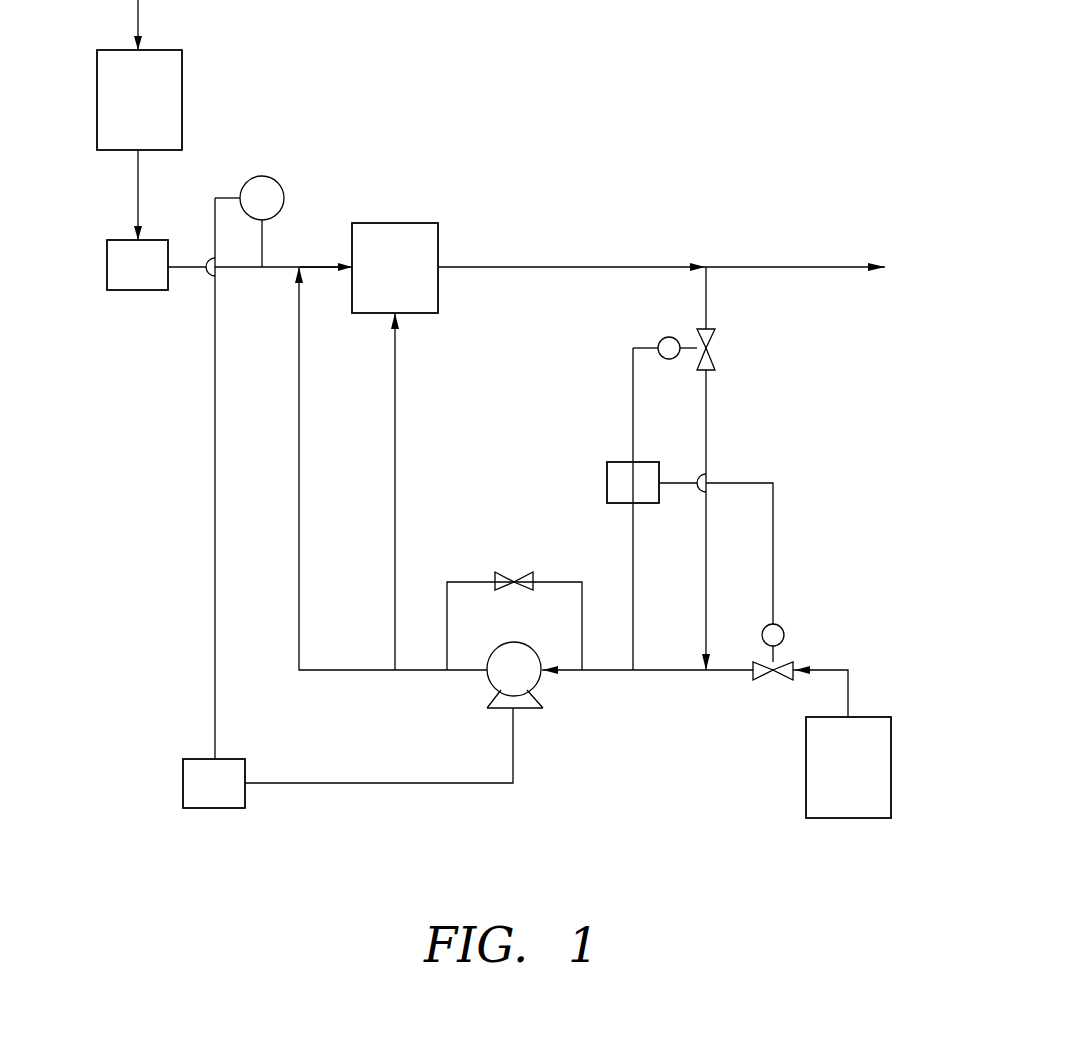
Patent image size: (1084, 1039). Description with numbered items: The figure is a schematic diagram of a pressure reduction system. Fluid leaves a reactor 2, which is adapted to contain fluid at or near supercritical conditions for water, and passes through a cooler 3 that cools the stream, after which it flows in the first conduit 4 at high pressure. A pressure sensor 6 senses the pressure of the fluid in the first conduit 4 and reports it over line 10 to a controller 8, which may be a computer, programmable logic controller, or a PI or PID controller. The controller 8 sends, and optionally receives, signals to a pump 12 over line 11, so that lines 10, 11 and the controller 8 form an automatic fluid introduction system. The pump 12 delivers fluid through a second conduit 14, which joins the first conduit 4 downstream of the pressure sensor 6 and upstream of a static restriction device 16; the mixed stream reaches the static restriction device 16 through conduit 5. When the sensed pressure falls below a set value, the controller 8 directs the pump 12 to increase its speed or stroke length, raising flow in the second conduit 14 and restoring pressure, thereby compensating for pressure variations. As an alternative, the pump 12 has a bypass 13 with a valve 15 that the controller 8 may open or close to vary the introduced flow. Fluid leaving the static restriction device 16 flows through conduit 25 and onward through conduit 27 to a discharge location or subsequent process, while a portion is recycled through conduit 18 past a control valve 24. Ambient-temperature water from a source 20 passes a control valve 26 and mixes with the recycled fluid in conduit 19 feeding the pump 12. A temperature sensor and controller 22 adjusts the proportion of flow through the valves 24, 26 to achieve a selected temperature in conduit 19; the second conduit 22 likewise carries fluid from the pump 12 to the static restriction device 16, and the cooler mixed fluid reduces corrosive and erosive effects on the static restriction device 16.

The reactor 2 is at (166, 103).
The cooler 3 is at (150, 290).
The first conduit 4 is at (282, 278).
The conduit 5 is at (318, 270).
The pressure sensor 6 is at (263, 193).
The controller 8 is at (208, 786).
The line 10 is at (215, 530).
The line 11 is at (387, 788).
The pump 12 is at (528, 680).
The bypass 13 is at (582, 598).
The second conduit 14 is at (299, 432).
The valve 15 is at (520, 575).
The static restriction device 16 is at (398, 253).
The recycle conduit 18 is at (706, 423).
The conduit 19 is at (633, 565).
The source 20 is at (835, 782).
The temperature sensor / controller 22 is at (395, 585).
The control valve 24 is at (712, 345).
The conduit 25 is at (528, 262).
The control valve 26 is at (789, 680).
The conduit 27 is at (833, 258).